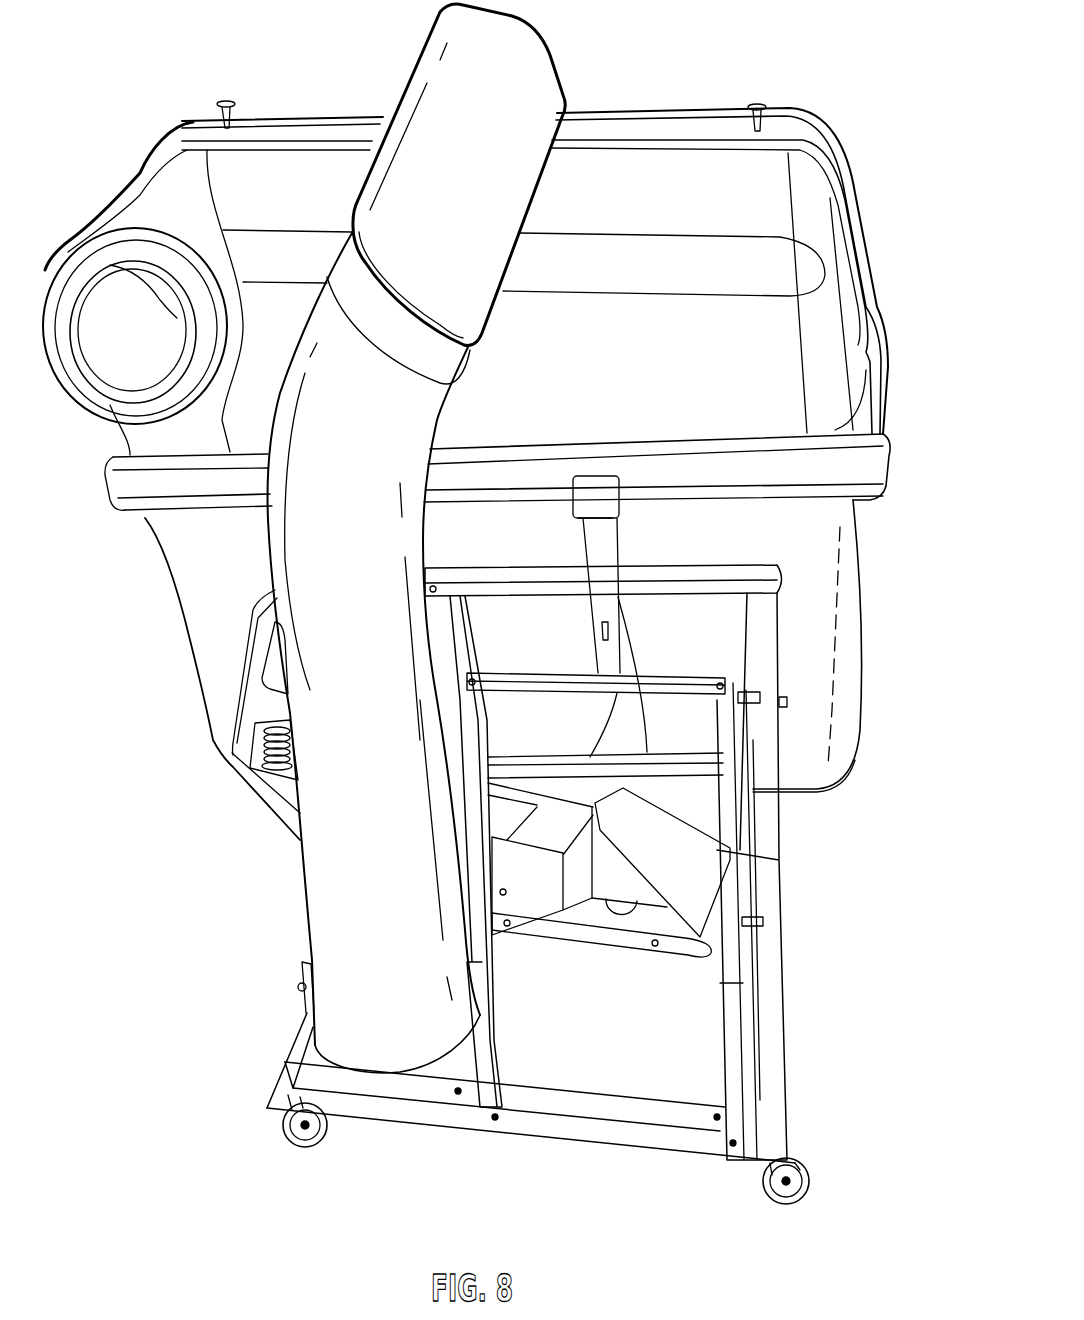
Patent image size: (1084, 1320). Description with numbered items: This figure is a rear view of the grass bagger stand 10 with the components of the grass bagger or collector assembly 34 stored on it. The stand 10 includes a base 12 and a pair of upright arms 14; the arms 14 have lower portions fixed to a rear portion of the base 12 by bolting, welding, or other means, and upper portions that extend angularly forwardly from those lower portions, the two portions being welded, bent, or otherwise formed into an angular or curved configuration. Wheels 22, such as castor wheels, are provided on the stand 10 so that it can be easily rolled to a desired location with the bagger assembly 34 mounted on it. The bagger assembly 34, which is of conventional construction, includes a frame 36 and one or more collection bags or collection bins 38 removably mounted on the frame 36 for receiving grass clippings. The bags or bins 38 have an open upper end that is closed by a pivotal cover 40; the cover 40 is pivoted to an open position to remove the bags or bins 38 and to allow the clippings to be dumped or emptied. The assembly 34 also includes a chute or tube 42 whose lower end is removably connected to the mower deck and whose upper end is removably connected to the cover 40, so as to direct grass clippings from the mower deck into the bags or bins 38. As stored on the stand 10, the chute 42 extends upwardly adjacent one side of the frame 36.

The grass bagger stand 10 is at (631, 1191).
The base 12 is at (541, 1128).
The upright arms 14 is at (497, 1005).
The wheels 22 is at (310, 1140).
The grass bagger or collector assembly 34 is at (878, 522).
The frame 36 is at (677, 575).
The collection bags or collection bins 38 is at (193, 587).
The pivotal cover 40 is at (667, 367).
The chute or tube 42 is at (330, 858).